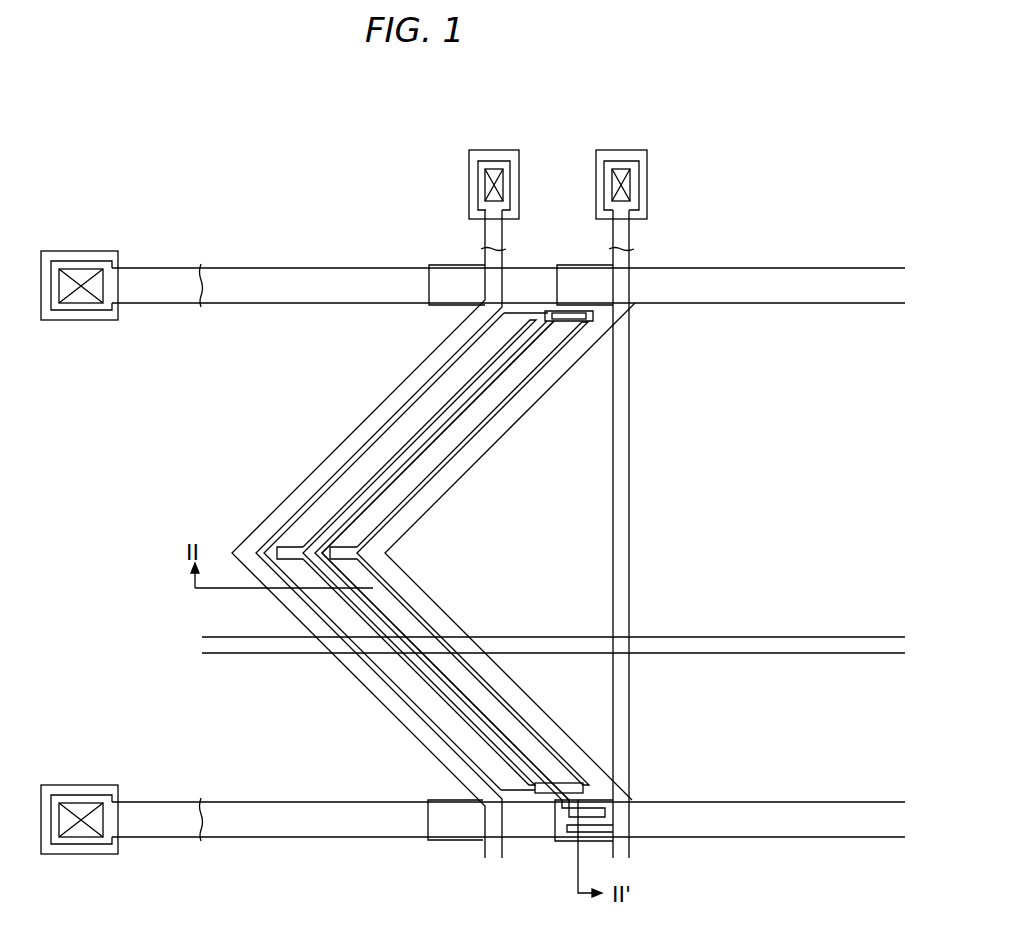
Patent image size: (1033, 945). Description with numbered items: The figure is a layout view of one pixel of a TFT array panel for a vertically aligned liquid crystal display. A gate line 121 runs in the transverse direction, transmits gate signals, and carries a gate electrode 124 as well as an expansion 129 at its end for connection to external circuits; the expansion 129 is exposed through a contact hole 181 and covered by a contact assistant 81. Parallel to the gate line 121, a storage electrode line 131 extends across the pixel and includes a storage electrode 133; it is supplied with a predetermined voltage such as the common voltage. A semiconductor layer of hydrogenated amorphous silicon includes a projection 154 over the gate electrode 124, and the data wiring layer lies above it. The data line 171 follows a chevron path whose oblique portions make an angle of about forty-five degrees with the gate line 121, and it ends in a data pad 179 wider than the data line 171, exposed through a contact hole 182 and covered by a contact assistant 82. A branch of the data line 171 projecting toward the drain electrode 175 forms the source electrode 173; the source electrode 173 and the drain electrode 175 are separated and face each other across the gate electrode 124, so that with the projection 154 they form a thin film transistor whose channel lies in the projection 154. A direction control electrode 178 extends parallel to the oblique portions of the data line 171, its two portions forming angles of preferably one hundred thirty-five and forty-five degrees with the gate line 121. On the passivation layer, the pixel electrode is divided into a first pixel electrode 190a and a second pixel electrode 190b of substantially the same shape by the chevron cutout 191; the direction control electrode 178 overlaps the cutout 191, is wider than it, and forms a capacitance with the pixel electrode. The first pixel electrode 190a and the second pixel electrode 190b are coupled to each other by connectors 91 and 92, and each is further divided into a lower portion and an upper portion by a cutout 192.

The contact assistant 81 is at (58, 788).
The contact assistant 82 is at (647, 205).
The connector 91 is at (548, 312).
The connector 92 is at (545, 787).
The gate line 121 is at (415, 840).
The gate electrode 124 is at (568, 840).
The expansion 129 is at (102, 797).
The storage electrode line 131 is at (696, 656).
The storage electrode 133 is at (418, 637).
The projection 154 is at (550, 823).
The data line 171 is at (450, 632).
The source electrode 173 is at (602, 832).
The drain electrode 175 is at (590, 800).
The direction control electrode 178 is at (500, 378).
The data pad 179 is at (608, 180).
The contact hole 181 is at (93, 842).
The contact hole 182 is at (640, 170).
The first pixel electrode 190a is at (345, 467).
The second pixel electrode 190b is at (435, 472).
The cutout 191 is at (432, 420).
The cutout 192 is at (362, 553).